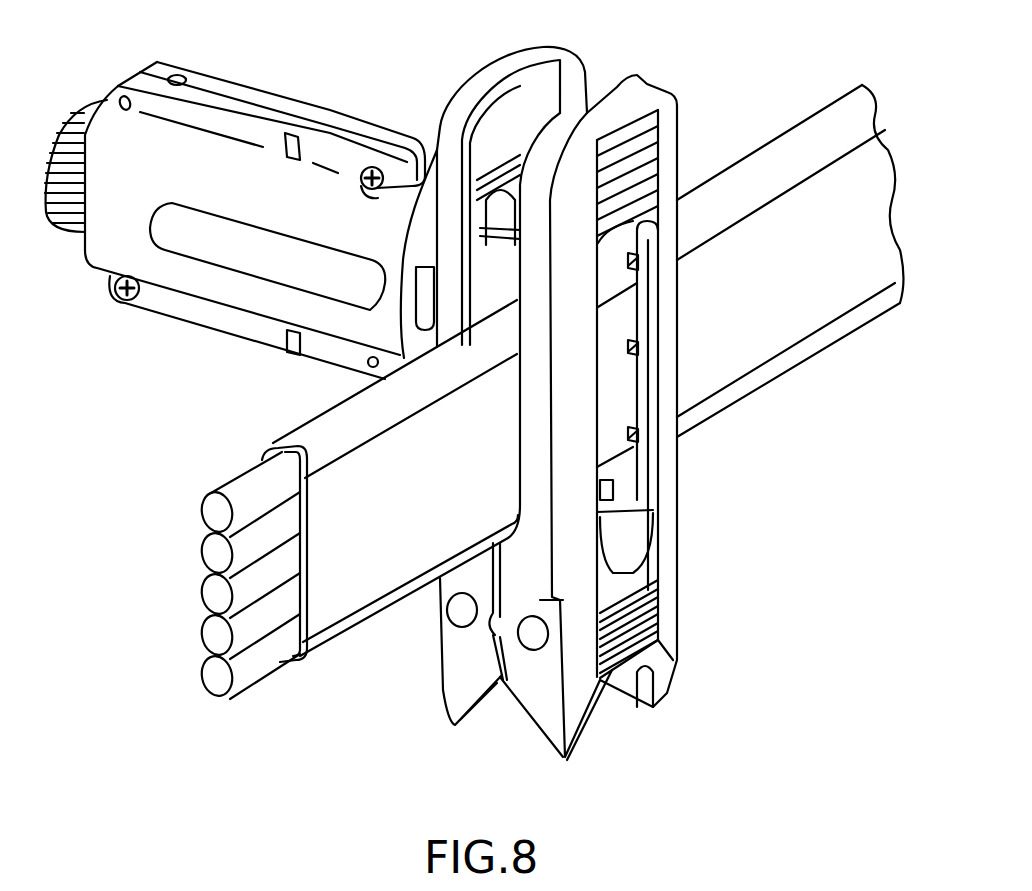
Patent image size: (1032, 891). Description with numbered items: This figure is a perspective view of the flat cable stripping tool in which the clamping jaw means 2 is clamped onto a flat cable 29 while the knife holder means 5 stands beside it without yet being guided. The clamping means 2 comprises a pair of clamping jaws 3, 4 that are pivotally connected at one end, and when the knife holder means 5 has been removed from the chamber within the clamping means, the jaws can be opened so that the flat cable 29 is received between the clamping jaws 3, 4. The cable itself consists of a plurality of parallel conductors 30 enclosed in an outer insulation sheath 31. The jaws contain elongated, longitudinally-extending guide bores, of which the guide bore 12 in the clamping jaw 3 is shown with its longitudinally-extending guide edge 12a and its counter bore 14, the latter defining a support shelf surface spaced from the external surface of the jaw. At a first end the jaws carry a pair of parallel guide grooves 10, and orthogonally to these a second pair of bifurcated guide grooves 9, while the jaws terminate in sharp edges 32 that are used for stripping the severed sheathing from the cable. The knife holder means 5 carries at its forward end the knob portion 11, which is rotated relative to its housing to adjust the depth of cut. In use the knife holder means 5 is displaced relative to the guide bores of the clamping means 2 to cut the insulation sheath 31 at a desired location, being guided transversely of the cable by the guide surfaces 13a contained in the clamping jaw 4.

The clamping jaw means 2 is at (667, 290).
The clamping jaw 3 is at (645, 85).
The clamping jaw 4 is at (457, 232).
The knife holder means 5 is at (269, 90).
The bifurcated guide grooves 9 is at (502, 706).
The guide grooves 10 is at (597, 715).
The knob portion 11 is at (85, 118).
The guide bore 12 is at (612, 407).
The guide edge 12a is at (648, 347).
The guide edge 13a is at (523, 217).
The counter bore 14 is at (652, 396).
The flat cable 29 is at (812, 288).
The parallel conductors 30 is at (217, 676).
The outer insulation sheath 31 is at (300, 660).
The sharp edges 32 is at (457, 725).